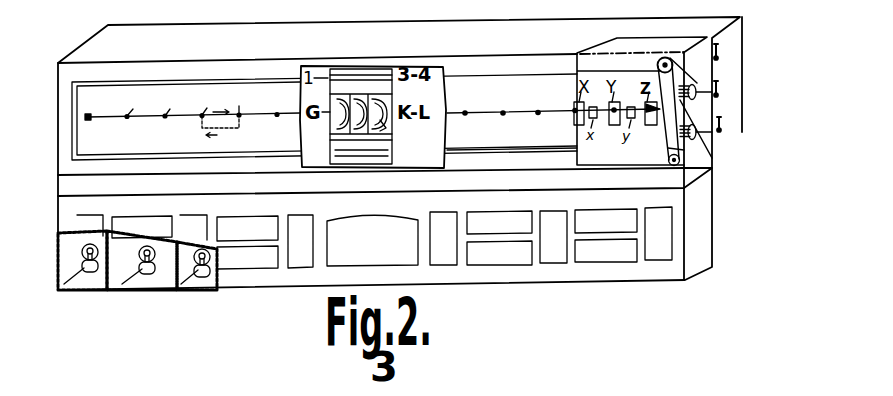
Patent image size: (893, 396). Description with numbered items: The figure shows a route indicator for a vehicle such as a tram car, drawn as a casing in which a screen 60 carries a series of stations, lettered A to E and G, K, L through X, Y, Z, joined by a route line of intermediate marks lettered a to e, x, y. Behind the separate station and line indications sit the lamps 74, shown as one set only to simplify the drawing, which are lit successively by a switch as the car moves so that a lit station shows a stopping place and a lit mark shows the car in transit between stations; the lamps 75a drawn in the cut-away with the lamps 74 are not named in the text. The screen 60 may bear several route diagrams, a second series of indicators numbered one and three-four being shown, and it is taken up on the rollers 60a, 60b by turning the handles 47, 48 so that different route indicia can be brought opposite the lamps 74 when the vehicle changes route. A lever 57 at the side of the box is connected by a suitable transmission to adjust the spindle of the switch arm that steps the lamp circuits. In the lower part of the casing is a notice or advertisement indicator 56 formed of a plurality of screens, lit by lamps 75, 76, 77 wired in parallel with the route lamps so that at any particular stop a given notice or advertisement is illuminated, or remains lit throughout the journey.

The notice or advertisement indicator 56 is at (680, 232).
The screen 60 is at (317, 90).
The roller 60a is at (721, 127).
The roller 60b is at (684, 152).
The signal lamps 75a is at (387, 94).
The lamps 74 is at (384, 126).
The handle 48 is at (678, 143).
The handle 47 is at (719, 90).
The lever 57 is at (719, 53).
The lamp 75 is at (84, 258).
The lamp 76 is at (141, 270).
The lamp 77 is at (209, 258).